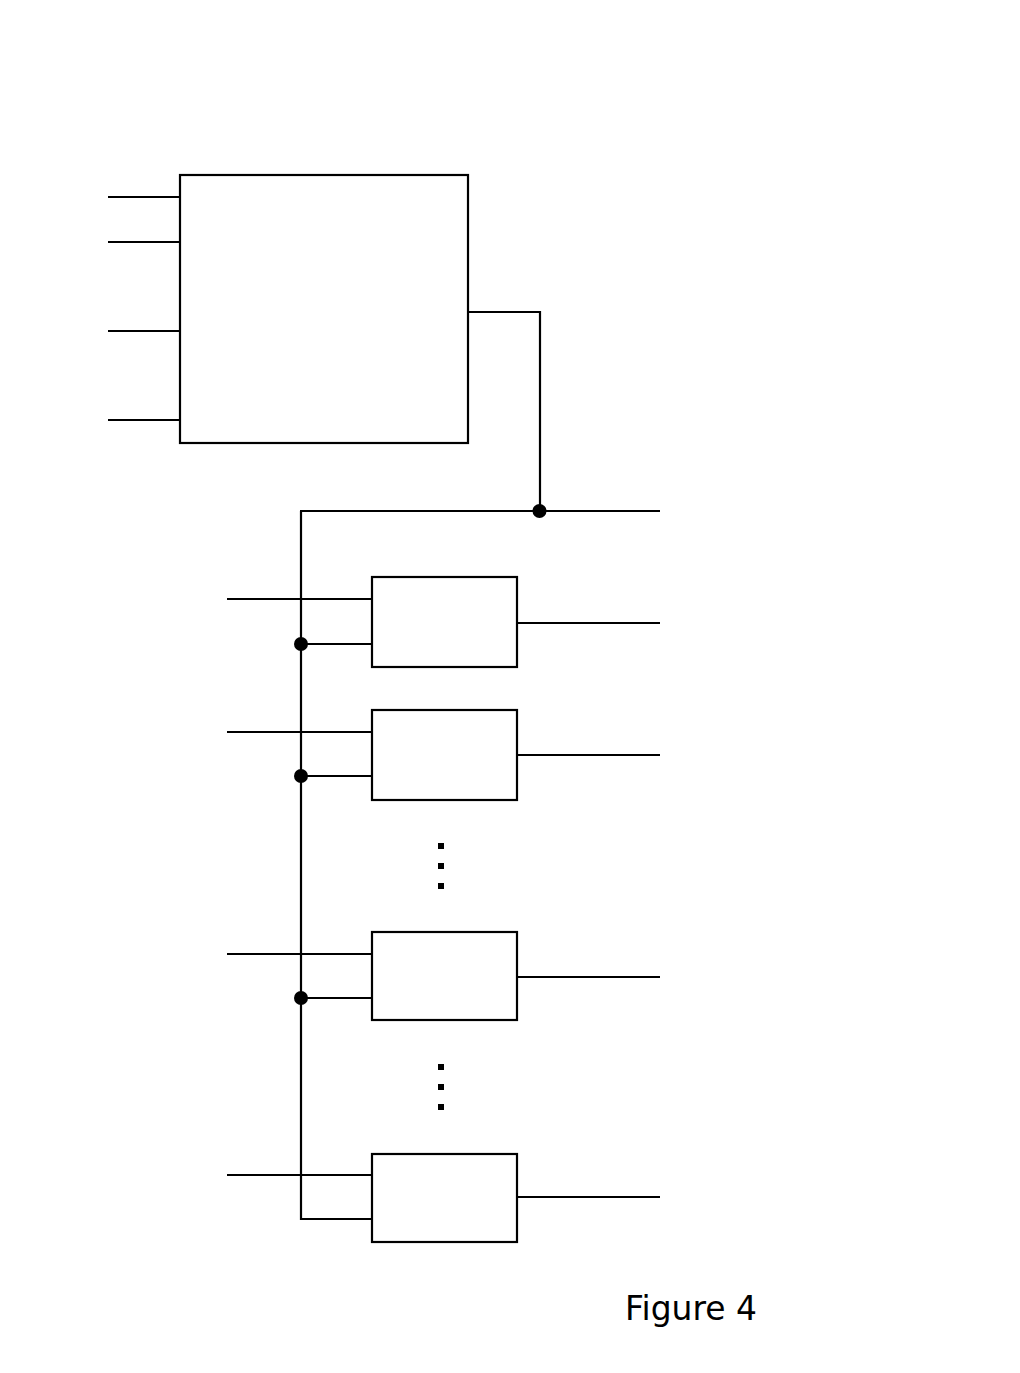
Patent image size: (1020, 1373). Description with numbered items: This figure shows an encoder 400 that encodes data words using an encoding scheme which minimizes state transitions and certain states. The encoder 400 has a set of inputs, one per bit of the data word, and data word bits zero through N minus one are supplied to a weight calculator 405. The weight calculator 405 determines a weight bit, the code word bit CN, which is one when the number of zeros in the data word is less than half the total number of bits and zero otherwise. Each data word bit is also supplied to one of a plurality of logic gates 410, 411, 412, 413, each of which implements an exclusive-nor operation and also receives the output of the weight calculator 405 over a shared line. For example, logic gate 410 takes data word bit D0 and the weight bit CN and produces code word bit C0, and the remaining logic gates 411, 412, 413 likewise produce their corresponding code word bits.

The encoder 400 is at (150, 82).
The weight calculator 405 is at (420, 175).
The logic gate 410 is at (468, 577).
The logic gate 411 is at (517, 723).
The logic gate 412 is at (492, 932).
The logic gate 413 is at (492, 1154).